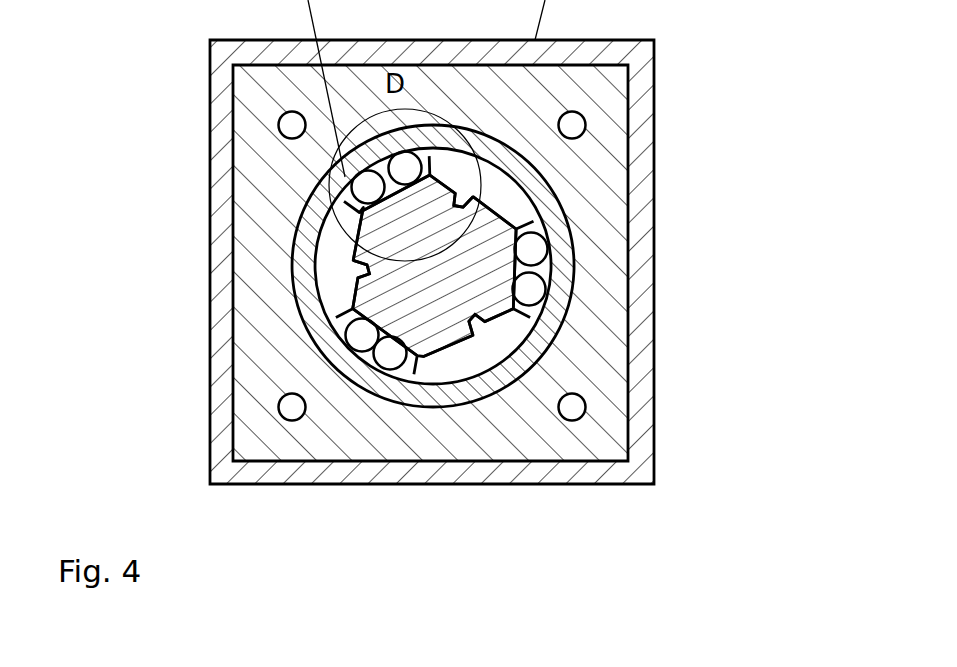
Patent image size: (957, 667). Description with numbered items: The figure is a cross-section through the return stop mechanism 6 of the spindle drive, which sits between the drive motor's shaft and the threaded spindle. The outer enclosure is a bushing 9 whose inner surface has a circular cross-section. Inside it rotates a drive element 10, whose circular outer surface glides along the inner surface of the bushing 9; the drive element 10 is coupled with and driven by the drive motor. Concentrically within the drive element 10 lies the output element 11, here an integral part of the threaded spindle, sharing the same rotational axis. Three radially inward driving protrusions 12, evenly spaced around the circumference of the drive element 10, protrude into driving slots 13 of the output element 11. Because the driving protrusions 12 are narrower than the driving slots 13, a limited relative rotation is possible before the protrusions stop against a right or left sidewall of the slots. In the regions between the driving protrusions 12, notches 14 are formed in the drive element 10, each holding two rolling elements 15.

The return stop mechanism 6 is at (276, 246).
The bushing 9 is at (550, 220).
The drive element 10 is at (352, 287).
The output element 11 is at (478, 292).
The driving protrusions 12 is at (352, 266).
The driving slots 13 is at (334, 289).
The notches 14 is at (540, 232).
The rolling elements 15 is at (358, 0).